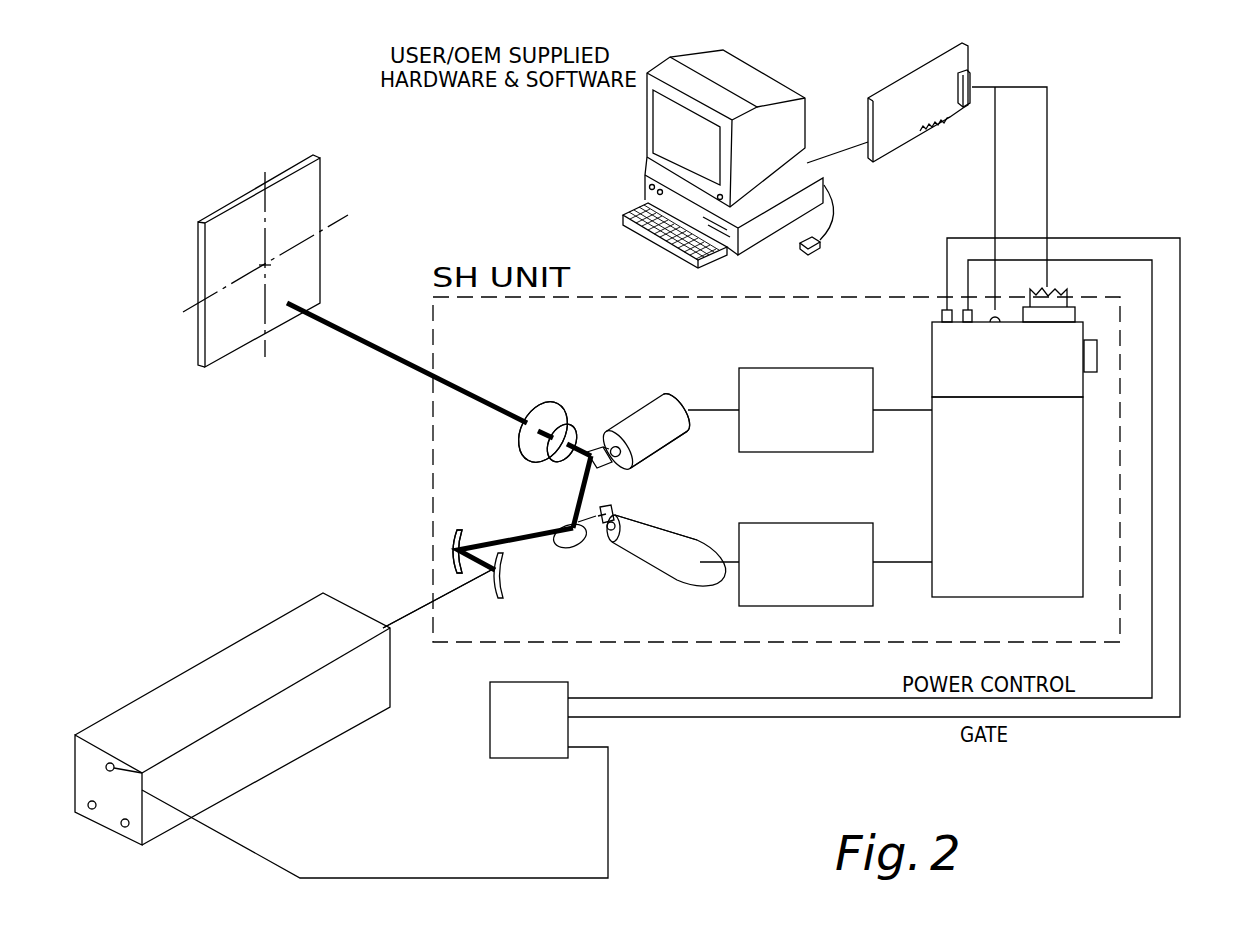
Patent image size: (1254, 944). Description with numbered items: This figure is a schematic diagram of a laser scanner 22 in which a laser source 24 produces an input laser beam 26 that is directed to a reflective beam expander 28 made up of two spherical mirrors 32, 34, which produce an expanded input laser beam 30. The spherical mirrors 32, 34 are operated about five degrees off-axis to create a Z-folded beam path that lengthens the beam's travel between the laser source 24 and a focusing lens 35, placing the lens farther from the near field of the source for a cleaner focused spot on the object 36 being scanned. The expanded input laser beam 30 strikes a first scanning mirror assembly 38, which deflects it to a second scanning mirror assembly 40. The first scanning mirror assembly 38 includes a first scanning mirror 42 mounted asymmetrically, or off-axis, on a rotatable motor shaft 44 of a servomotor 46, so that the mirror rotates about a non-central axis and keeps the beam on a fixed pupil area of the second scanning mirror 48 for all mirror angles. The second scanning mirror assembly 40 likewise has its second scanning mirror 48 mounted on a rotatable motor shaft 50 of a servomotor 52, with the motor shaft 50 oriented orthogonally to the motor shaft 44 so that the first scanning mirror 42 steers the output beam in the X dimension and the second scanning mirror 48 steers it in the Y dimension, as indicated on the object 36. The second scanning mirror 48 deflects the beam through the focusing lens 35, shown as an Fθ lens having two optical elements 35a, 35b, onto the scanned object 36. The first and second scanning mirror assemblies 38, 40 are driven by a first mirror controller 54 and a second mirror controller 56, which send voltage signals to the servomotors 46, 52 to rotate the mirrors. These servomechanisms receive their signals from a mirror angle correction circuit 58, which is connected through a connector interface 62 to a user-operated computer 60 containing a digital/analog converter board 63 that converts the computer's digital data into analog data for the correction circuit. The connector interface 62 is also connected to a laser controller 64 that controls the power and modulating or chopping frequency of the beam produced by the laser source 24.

The laser scanner 22 is at (1172, 148).
The laser source 24 is at (267, 645).
The input laser beam 26 is at (417, 617).
The beam expander 28 is at (522, 590).
The expanded input laser beam 30 is at (488, 537).
The spherical mirror 32 is at (510, 565).
The spherical mirror 34 is at (456, 538).
The focusing lens 35 is at (547, 388).
The optical element 35a is at (548, 457).
The optical element 35b is at (530, 437).
The object 36 is at (217, 347).
The first scanning mirror assembly 38 is at (626, 572).
The second scanning mirror assembly 40 is at (661, 380).
The first scanning mirror 42 is at (538, 535).
The rotatable motor shaft 44 is at (617, 507).
The servomotor 46 is at (681, 530).
The second scanning mirror 48 is at (590, 477).
The rotatable motor shaft 50 is at (600, 427).
The servomotor 52 is at (687, 437).
The first mirror controller 54 is at (872, 585).
The second mirror controller 56 is at (870, 443).
The mirror angle correction circuit 58 is at (1070, 443).
The user-operated computer 60 is at (755, 250).
The connector interface 62 is at (1073, 368).
The digital/analog converter board 63 is at (962, 60).
The laser controller 64 is at (495, 720).